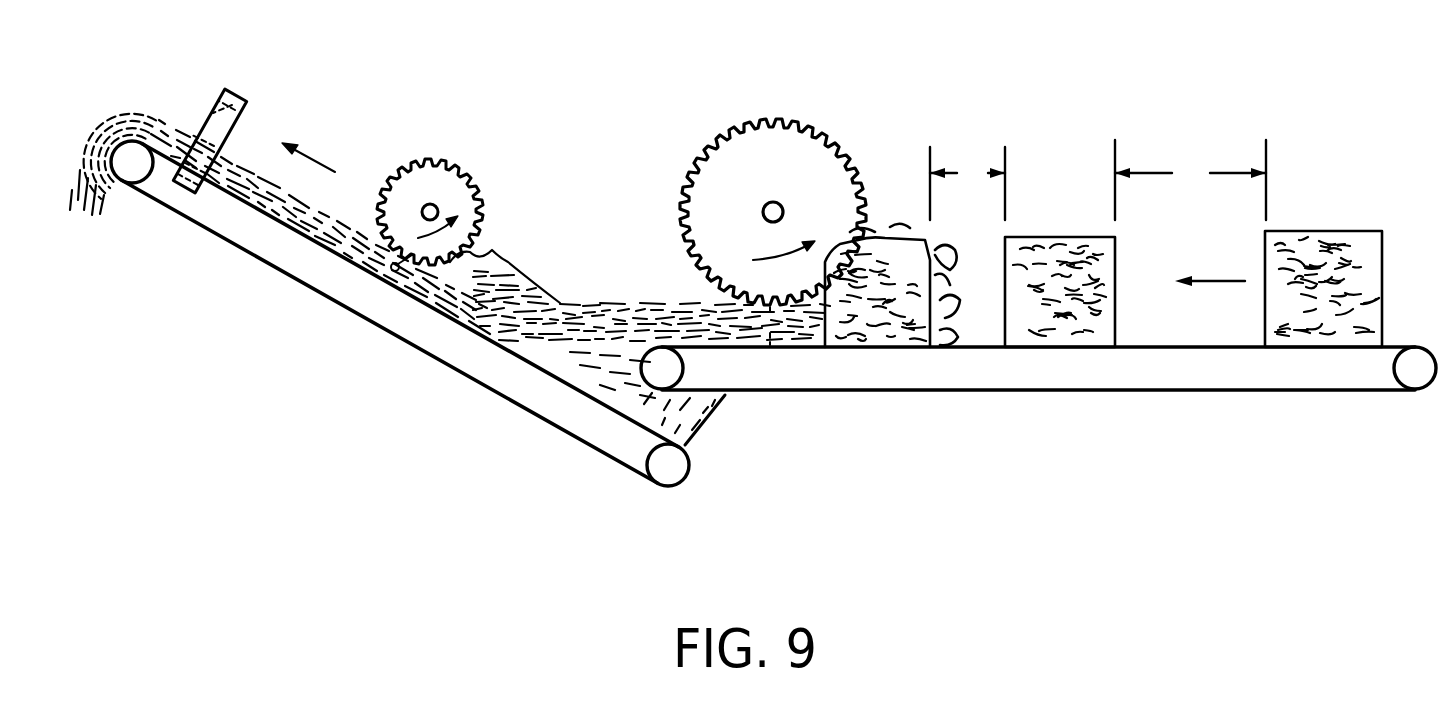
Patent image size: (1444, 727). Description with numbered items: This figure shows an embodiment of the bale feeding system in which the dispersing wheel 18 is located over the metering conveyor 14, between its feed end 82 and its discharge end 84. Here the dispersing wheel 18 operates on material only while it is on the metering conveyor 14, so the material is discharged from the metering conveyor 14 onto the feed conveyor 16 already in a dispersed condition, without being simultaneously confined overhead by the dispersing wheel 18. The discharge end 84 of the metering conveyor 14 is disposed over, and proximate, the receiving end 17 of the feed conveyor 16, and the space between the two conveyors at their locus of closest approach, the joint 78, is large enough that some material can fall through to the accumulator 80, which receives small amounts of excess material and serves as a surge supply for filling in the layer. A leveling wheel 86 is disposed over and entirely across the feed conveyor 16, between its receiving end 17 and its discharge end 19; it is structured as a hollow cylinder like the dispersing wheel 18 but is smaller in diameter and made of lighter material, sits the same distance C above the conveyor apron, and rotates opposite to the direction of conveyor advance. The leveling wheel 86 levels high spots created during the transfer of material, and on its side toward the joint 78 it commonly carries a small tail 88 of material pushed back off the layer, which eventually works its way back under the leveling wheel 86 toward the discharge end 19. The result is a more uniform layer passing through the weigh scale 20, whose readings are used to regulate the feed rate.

The metering conveyor 14 is at (1050, 392).
The feed conveyor 16 is at (345, 308).
The receiving end 17 is at (679, 487).
The dispersing wheel 18 is at (785, 122).
The discharge end 19 is at (128, 185).
The weigh scale 20 is at (240, 92).
The joint 78 is at (598, 393).
The accumulator 80 is at (707, 413).
The feed end 82 is at (1420, 392).
The discharge end 84 is at (640, 352).
The leveling wheel 86 is at (456, 165).
The tail 88 is at (485, 262).